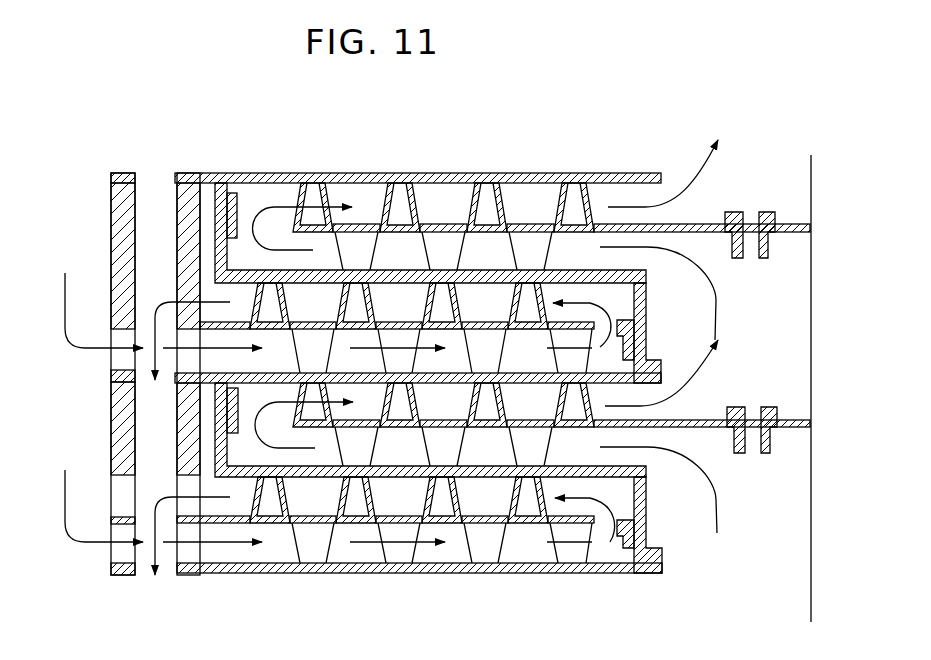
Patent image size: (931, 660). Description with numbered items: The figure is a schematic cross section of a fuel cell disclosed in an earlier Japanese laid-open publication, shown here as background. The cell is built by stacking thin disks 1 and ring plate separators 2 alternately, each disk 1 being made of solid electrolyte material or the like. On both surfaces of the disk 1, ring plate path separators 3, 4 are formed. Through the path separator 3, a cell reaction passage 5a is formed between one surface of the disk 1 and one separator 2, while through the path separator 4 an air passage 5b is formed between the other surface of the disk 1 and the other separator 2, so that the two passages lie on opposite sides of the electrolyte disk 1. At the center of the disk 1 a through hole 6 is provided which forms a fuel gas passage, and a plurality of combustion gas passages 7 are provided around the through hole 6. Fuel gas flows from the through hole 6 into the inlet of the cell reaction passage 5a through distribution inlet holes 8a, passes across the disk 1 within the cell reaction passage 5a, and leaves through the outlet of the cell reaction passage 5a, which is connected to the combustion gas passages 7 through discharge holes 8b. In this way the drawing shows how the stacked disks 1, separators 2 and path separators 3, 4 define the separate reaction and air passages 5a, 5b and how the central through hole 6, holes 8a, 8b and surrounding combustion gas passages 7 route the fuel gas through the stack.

The thin disk 1 is at (607, 181).
The ring plate separator 2 is at (437, 268).
The ring plate path separator 3 is at (290, 527).
The ring plate path separator 4 is at (700, 415).
The cell reaction passage 5a is at (612, 540).
The air passage 5b is at (282, 206).
The through hole 6 is at (73, 210).
The combustion gas passage 7 is at (155, 210).
The distribution inlet hole 8a is at (125, 556).
The discharge hole 8b is at (188, 510).